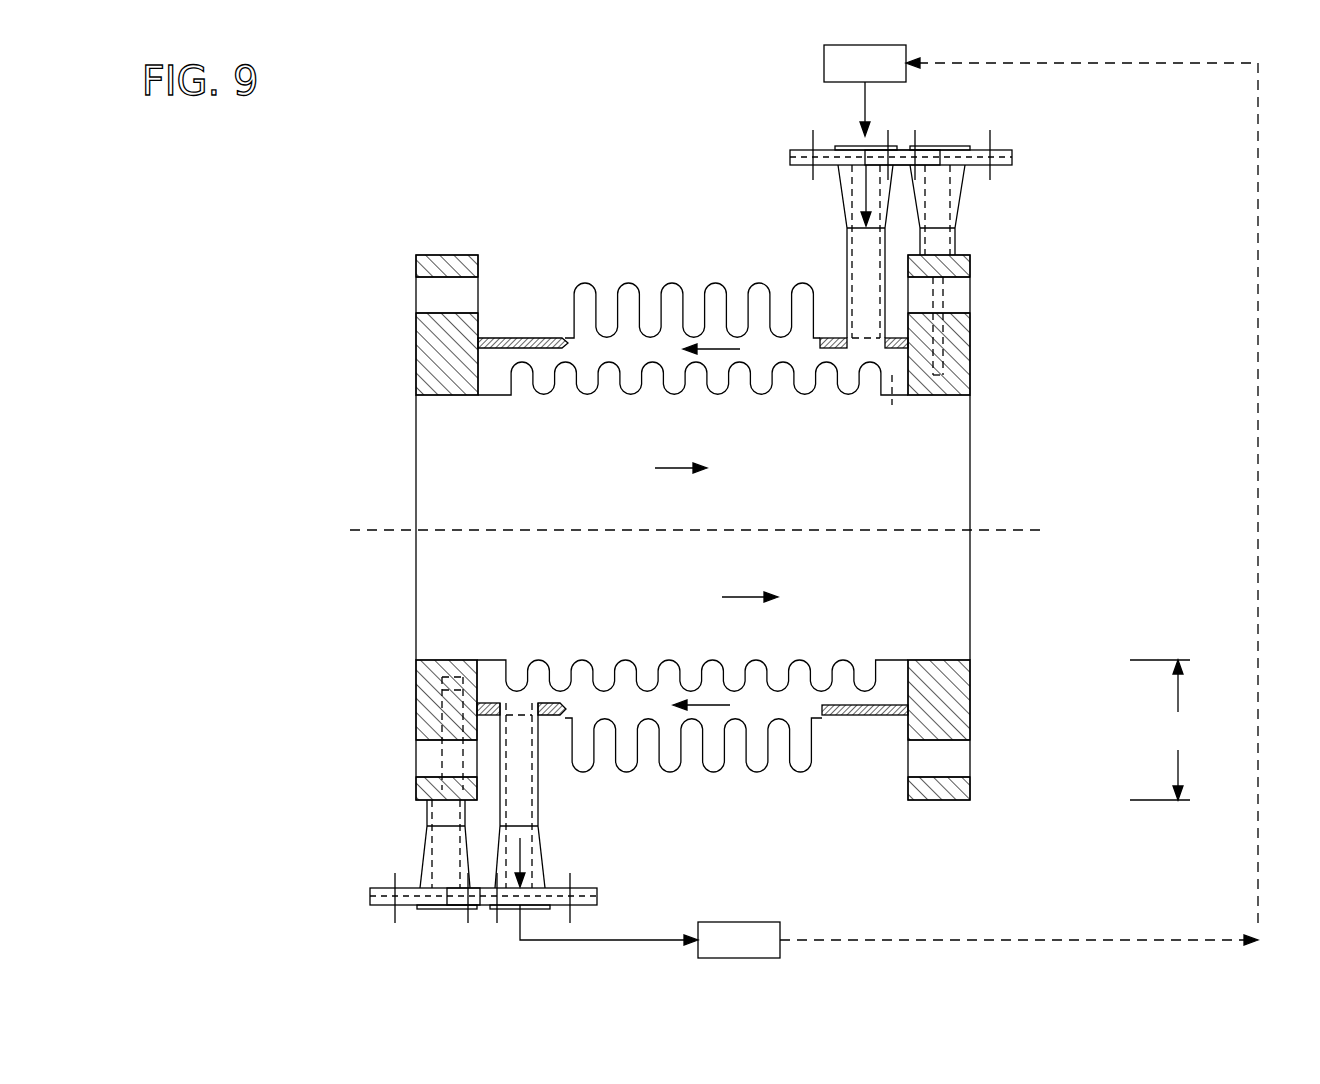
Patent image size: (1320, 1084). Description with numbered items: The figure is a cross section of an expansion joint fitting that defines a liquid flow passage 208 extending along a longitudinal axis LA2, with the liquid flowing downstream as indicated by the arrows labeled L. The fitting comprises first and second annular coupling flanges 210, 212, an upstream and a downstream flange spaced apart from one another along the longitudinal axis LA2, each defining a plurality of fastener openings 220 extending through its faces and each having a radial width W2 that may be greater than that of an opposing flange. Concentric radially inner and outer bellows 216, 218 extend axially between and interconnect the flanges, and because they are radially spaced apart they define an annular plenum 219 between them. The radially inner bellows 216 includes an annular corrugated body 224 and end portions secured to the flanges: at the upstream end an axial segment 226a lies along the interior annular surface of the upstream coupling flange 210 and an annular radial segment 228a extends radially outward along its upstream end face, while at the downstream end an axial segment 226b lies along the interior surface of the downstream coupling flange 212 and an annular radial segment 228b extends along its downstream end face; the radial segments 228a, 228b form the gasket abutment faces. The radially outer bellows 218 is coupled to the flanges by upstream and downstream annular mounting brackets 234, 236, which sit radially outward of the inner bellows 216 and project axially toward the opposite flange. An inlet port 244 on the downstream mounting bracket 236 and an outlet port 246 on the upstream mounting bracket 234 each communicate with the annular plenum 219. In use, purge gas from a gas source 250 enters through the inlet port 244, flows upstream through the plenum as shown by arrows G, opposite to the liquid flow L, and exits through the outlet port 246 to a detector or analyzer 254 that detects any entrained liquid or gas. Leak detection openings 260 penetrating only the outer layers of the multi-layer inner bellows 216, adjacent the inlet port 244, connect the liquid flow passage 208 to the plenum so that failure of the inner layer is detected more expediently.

The liquid flow passage 208 is at (878, 510).
The first annular coupling flange 210 is at (428, 255).
The second annular coupling flange 212 is at (972, 268).
The radially inner bellows 216 is at (787, 409).
The radially outer bellows 218 is at (679, 272).
The annular plenum 219 is at (583, 352).
The fastener openings 220 is at (446, 289).
The annular corrugated body 224 is at (546, 395).
The axial segment 226a is at (437, 395).
The axial segment 226b is at (940, 395).
The annular radial segment 228a is at (416, 357).
The annular radial segment 228b is at (972, 352).
The upstream annular mounting bracket 234 is at (507, 338).
The downstream annular mounting bracket 236 is at (895, 350).
The inlet port 244 is at (847, 262).
The outlet port 246 is at (540, 810).
The gas source 250 is at (824, 66).
The detector or analyzer 254 is at (745, 922).
The leak detection openings 260 is at (892, 405).
The arrows indicating purge gas flow G is at (845, 178).
The arrows indicating liquid flow L is at (658, 468).
The longitudinal axis LA2 is at (697, 530).
The radial width W2 is at (1164, 730).